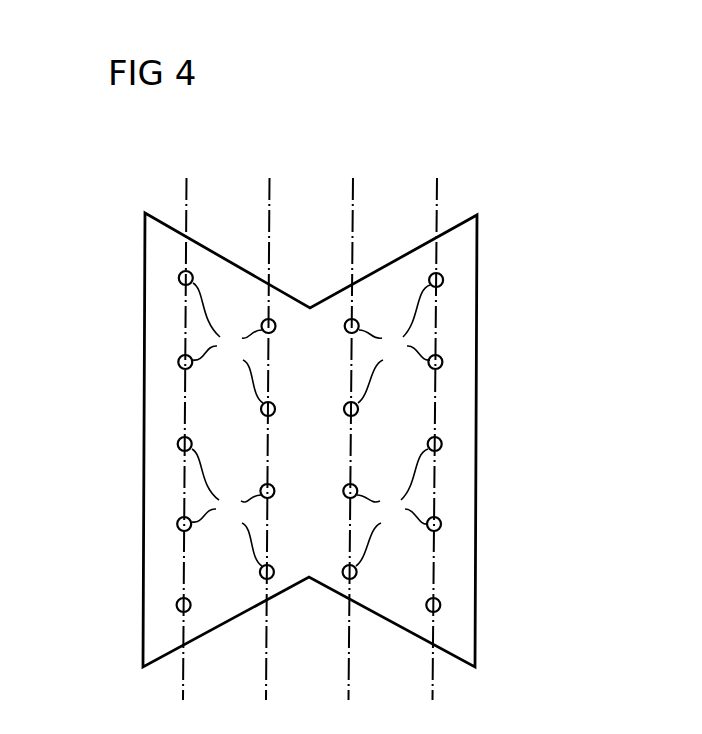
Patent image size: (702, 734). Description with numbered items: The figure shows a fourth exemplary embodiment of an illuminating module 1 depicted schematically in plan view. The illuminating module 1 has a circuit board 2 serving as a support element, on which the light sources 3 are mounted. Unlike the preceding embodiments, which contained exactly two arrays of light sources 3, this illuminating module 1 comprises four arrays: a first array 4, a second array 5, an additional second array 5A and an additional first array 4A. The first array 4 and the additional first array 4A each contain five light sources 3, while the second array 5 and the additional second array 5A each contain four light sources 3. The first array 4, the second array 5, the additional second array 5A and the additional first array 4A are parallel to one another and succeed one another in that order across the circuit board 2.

The illuminating module 1 is at (468, 172).
The circuit board 2 is at (160, 257).
The light sources 3 is at (311, 424).
The first array 4 is at (186, 191).
The second array 5 is at (269, 191).
The additional second array 5A is at (353, 191).
The additional first array 4A is at (437, 191).